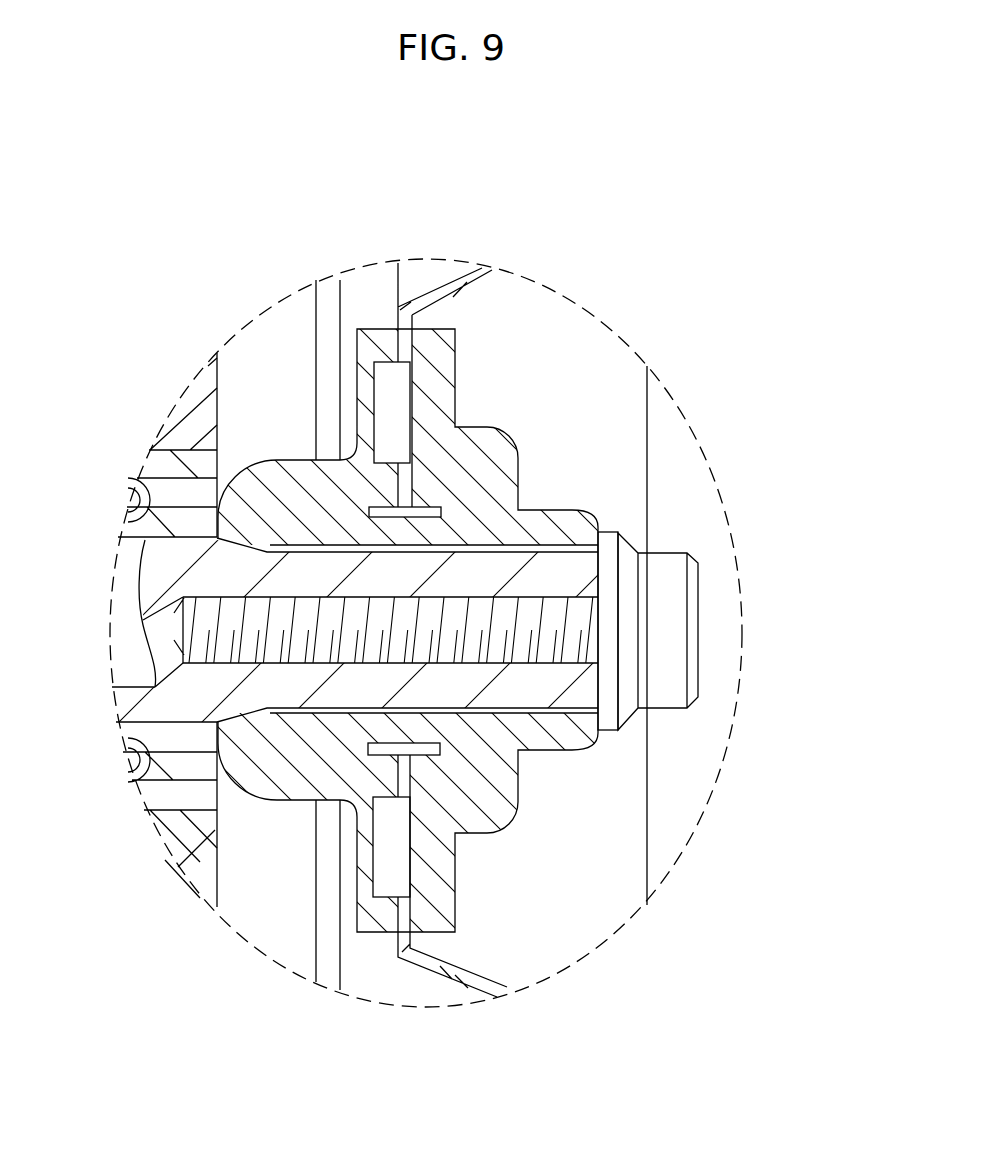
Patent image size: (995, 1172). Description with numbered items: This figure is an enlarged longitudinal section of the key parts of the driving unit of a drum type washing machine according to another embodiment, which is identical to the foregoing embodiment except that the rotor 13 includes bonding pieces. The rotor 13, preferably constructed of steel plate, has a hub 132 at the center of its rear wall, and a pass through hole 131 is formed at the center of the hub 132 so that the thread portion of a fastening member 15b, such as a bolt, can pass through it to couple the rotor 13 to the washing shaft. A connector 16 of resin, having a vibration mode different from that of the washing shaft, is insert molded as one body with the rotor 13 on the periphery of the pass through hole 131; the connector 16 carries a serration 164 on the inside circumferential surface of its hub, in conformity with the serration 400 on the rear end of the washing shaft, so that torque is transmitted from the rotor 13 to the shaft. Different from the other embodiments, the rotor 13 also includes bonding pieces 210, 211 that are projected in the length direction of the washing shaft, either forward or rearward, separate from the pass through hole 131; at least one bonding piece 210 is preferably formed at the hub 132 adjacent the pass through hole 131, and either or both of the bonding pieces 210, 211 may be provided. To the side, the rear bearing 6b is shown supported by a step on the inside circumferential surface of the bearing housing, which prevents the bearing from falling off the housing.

The rotor 13 is at (439, 283).
The connector 16 is at (518, 432).
The bonding piece 210 is at (391, 410).
The bonding piece 211 is at (425, 514).
The serration 400 is at (701, 631).
The serration 164 is at (658, 631).
The fastening member 15b is at (217, 633).
The pass through hole 131 is at (423, 727).
The hub 132 is at (403, 912).
The rear bearing 6b is at (160, 797).